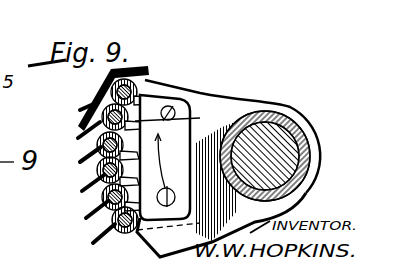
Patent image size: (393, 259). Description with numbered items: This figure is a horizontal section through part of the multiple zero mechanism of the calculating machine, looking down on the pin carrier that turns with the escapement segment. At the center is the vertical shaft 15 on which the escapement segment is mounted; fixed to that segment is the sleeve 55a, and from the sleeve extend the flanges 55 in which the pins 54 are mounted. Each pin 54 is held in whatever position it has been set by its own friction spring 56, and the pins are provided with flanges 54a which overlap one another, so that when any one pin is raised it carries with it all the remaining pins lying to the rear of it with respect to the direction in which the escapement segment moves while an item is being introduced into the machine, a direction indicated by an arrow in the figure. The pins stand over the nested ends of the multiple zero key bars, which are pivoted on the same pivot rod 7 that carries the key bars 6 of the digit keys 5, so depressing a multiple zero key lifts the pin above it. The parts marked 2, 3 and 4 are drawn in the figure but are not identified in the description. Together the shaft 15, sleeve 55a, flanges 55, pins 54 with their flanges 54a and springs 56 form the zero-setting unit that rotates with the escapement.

The key lever 2 is at (78, 108).
The key lever 3 is at (78, 138).
The key lever 4 is at (80, 162).
The digit keys 5 is at (83, 191).
The key bars 6 is at (86, 218).
The pivot rod 7 is at (93, 243).
The vertical shaft 15 is at (287, 144).
The pins 54 is at (200, 139).
The flanges of pins 54a is at (200, 140).
The flanges 55 is at (229, 97).
The sleeve 55a is at (275, 118).
The friction springs 56 is at (190, 212).